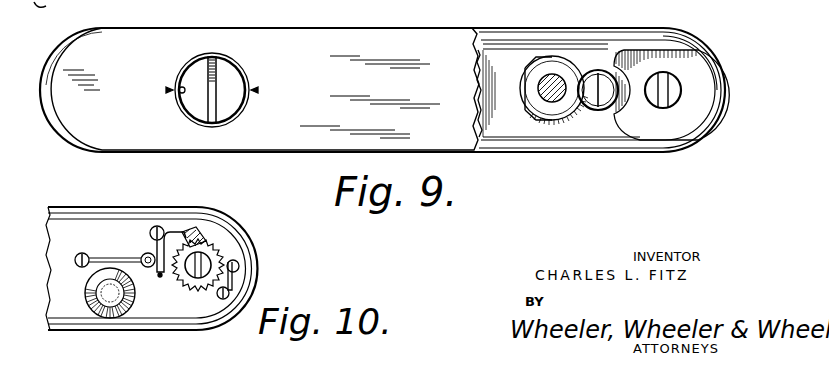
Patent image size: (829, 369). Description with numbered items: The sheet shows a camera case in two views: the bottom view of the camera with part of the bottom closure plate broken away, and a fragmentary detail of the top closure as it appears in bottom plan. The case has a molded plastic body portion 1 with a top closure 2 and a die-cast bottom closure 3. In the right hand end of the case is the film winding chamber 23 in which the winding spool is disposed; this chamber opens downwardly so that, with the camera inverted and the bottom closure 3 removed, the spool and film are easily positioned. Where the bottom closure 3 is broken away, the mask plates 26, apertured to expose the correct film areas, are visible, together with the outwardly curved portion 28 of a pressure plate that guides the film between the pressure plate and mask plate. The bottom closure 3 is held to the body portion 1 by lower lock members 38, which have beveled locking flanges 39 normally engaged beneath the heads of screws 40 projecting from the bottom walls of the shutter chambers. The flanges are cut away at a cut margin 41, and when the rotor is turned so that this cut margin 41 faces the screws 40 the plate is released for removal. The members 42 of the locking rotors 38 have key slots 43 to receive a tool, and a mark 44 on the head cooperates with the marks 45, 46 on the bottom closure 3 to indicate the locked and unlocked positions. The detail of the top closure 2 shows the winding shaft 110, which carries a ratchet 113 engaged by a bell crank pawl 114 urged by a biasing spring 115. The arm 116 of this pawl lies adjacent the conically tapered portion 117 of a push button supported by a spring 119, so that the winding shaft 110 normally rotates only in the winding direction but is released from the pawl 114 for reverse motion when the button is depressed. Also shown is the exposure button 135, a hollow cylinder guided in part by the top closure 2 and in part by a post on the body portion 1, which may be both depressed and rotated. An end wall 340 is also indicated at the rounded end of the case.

In FIG. 9, the body portion 1 is at (720, 74).
In FIG. 10, the top closure 2 is at (254, 292).
In FIG. 9, the bottom closure 3 is at (397, 50).
In FIG. 9, the film winding chamber 23 is at (700, 116).
In FIG. 9, the mask plates 26 is at (517, 52).
In FIG. 9, the outwardly curved portion 28 is at (596, 50).
In FIG. 9, the lower lock members 38 is at (554, 100).
In FIG. 9, the beveled locking flanges 39 is at (549, 114).
In FIG. 9, the screws 40 is at (600, 112).
In FIG. 9, the cut margin 41 is at (526, 100).
In FIG. 9, the members of the locking rotors 42 is at (232, 76).
In FIG. 9, the key slots 43 is at (213, 106).
In FIG. 9, the mark 44 is at (182, 94).
In FIG. 9, the mark 45 is at (164, 90).
In FIG. 9, the mark 46 is at (263, 106).
In FIG. 9, the end wall 340 is at (690, 50).
In FIG. 10, the winding shaft 110 is at (206, 264).
In FIG. 10, the ratchet 113 is at (216, 256).
In FIG. 10, the bell crank pawl 114 is at (172, 232).
In FIG. 10, the biasing spring 115 is at (206, 246).
In FIG. 10, the arm 116 is at (160, 278).
In FIG. 10, the conically tapered portion 117 is at (143, 254).
In FIG. 10, the spring 119 is at (108, 257).
In FIG. 10, the exposure button 135 is at (96, 290).